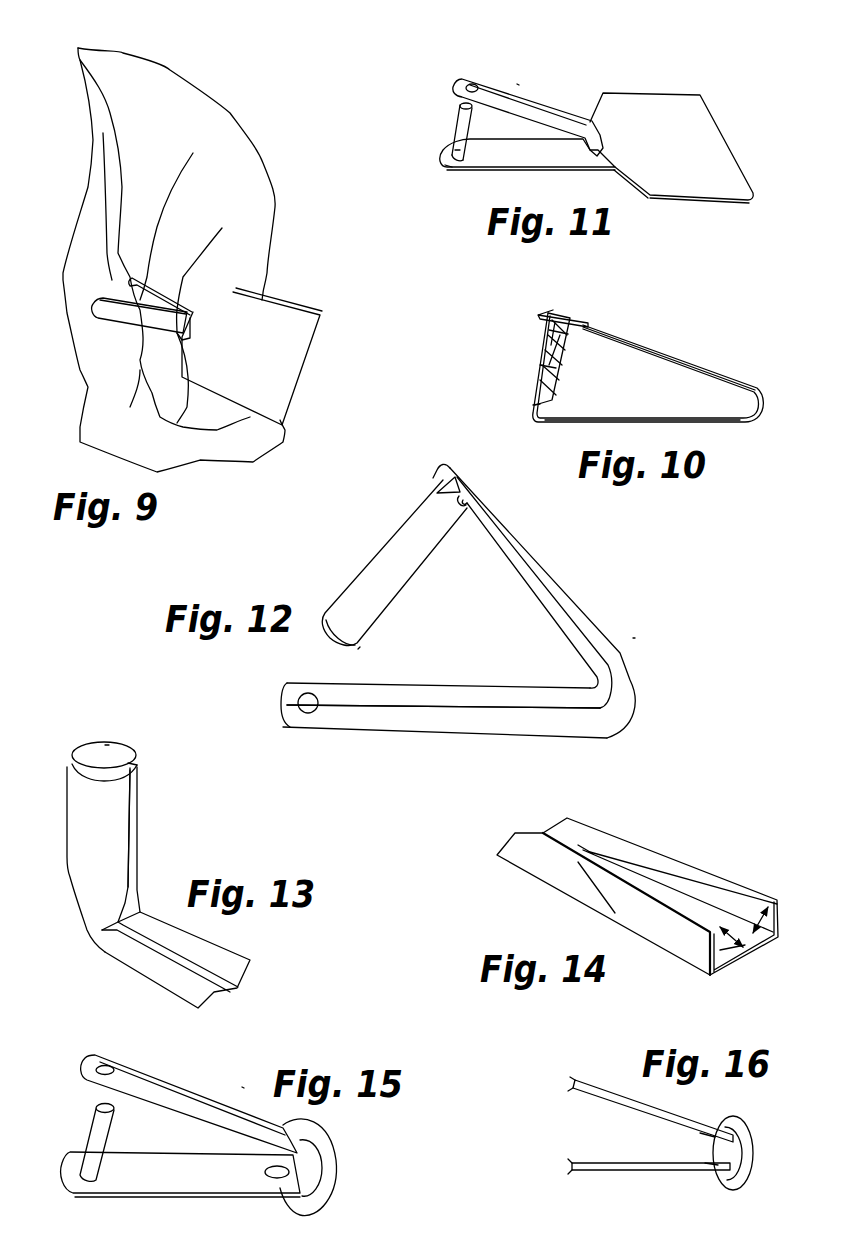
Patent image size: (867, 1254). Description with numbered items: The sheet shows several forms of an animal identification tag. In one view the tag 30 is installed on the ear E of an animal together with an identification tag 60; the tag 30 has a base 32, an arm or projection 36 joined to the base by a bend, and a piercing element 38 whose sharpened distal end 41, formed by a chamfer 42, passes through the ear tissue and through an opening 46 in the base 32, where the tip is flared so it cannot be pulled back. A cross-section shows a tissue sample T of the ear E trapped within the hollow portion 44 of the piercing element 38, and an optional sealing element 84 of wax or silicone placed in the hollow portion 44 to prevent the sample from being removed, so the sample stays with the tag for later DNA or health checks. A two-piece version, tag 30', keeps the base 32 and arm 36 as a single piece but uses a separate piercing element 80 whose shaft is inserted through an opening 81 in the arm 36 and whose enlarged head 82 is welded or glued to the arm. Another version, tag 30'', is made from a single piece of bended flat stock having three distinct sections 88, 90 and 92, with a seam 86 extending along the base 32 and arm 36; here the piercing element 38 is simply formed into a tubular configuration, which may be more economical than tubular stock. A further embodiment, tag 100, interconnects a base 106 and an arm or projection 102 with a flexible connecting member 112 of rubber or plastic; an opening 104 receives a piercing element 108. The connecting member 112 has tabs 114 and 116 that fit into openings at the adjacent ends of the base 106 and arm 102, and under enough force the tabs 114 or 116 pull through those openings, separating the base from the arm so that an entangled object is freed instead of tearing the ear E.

In FIG. 9, the ear E is at (232, 168).
In FIG. 9, the identification device or tag 30 is at (119, 341).
In FIG. 10, the identification device or tag 30 is at (648, 349).
In FIG. 11, the tag 30' is at (544, 62).
In FIG. 12, the tag 30'' is at (686, 608).
In FIG. 11, the base 32 is at (545, 113).
In FIG. 10, the base 32 is at (683, 360).
In FIG. 12, the base 32 is at (505, 722).
In FIG. 11, the arm or projection 36 is at (500, 155).
In FIG. 10, the arm or projection 36 is at (637, 415).
In FIG. 12, the arm or projection 36 is at (522, 553).
In FIG. 13, the arm or projection 36 is at (120, 952).
In FIG. 10, the piercing element 38 is at (565, 373).
In FIG. 12, the piercing element 38 is at (385, 575).
In FIG. 13, the piercing element 38 is at (70, 807).
In FIG. 10, the distal end or tip 41 is at (570, 310).
In FIG. 12, the distal end or tip 41 is at (360, 649).
In FIG. 13, the distal end or tip 41 is at (107, 745).
In FIG. 13, the chamfer 42 is at (135, 758).
In FIG. 10, the hollow portion 44 is at (542, 397).
In FIG. 11, the opening 46 is at (472, 82).
In FIG. 12, the opening 46 is at (310, 712).
In FIG. 9, the identification tag 60 is at (290, 357).
In FIG. 11, the identification tag 60 is at (702, 118).
In FIG. 11, the piercing element 80 is at (460, 130).
In FIG. 11, the opening 81 is at (461, 150).
In FIG. 11, the enlarged head 82 is at (450, 167).
In FIG. 10, the sealing element or sealant 84 is at (553, 332).
In FIG. 12, the seam 86 is at (413, 705).
In FIG. 13, the seam 86 is at (130, 826).
In FIG. 14, the seam 86 is at (565, 842).
In FIG. 14, the section of flat stock 88 is at (720, 897).
In FIG. 14, the section of flat stock 90 is at (690, 933).
In FIG. 14, the section of flat stock 92 is at (730, 952).
In FIG. 10, the tissue sample T is at (550, 365).
In FIG. 15, the tag 100 is at (243, 1087).
In FIG. 15, the arm or projection 102 is at (153, 1083).
In FIG. 16, the arm or projection 102 is at (618, 1097).
In FIG. 15, the opening 104 is at (105, 1065).
In FIG. 15, the base 106 is at (180, 1174).
In FIG. 16, the base 106 is at (657, 1168).
In FIG. 15, the piercing element 108 is at (100, 1137).
In FIG. 15, the flexible connecting member 112 is at (325, 1150).
In FIG. 16, the flexible connecting member 112 is at (747, 1137).
In FIG. 15, the tab 114 is at (273, 1180).
In FIG. 16, the tab 114 is at (717, 1165).
In FIG. 16, the tab 116 is at (713, 1137).